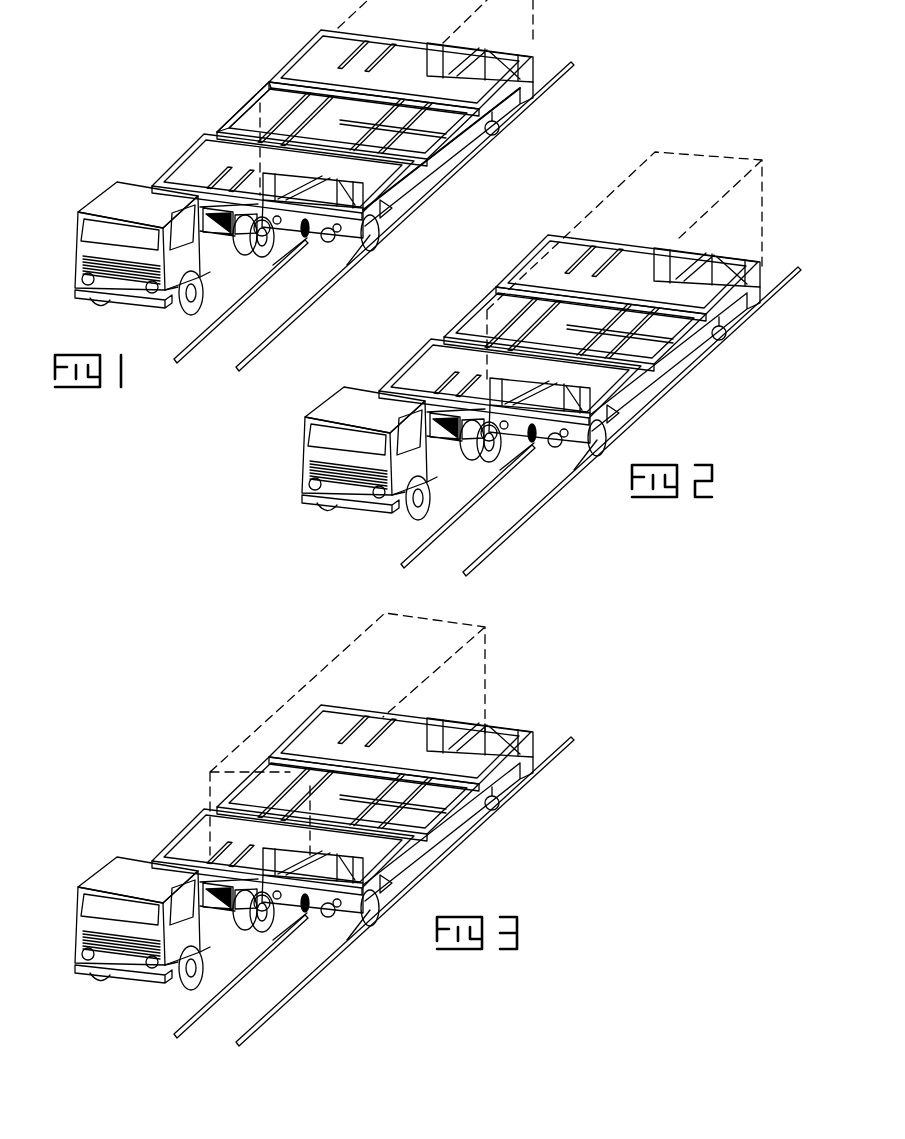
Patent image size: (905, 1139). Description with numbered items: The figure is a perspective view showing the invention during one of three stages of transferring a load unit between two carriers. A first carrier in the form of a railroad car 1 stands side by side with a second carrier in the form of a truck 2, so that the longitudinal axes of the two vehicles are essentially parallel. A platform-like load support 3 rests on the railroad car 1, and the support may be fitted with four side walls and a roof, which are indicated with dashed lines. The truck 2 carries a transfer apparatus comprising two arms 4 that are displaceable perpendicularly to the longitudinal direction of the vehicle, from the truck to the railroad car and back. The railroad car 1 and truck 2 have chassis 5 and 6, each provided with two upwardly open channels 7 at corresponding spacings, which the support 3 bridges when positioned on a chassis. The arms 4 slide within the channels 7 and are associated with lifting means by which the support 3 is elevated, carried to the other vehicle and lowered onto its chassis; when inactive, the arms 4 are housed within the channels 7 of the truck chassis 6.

In FIG. 1, the railroad car 1 is at (343, 238).
In FIG. 2, the railroad car 1 is at (539, 445).
In FIG. 3, the railroad car 1 is at (312, 915).
In FIG. 1, the truck 2 is at (103, 188).
In FIG. 2, the truck 2 is at (401, 453).
In FIG. 3, the truck 2 is at (174, 923).
In FIG. 1, the load support 3 is at (535, 57).
In FIG. 2, the load support 3 is at (624, 352).
In FIG. 3, the load support 3 is at (397, 806).
In FIG. 1, the transfer arms 4 is at (286, 52).
In FIG. 3, the transfer arms 4 is at (341, 792).
In FIG. 1, the chassis of railroad car 5 is at (448, 152).
In FIG. 1, the chassis of truck 6 is at (240, 100).
In FIG. 2, the channels 7 is at (568, 335).